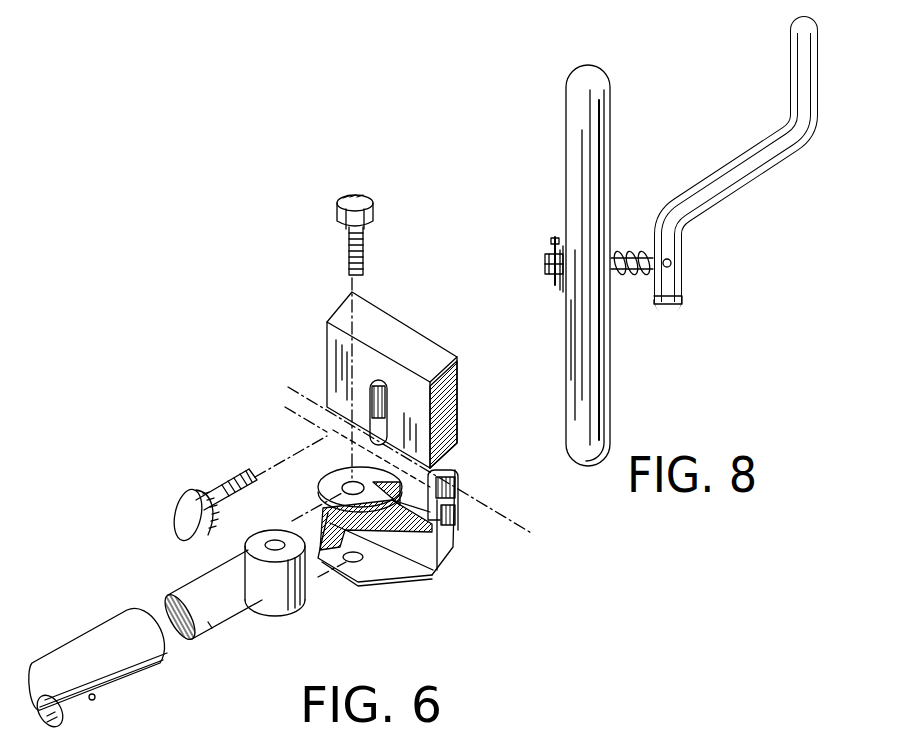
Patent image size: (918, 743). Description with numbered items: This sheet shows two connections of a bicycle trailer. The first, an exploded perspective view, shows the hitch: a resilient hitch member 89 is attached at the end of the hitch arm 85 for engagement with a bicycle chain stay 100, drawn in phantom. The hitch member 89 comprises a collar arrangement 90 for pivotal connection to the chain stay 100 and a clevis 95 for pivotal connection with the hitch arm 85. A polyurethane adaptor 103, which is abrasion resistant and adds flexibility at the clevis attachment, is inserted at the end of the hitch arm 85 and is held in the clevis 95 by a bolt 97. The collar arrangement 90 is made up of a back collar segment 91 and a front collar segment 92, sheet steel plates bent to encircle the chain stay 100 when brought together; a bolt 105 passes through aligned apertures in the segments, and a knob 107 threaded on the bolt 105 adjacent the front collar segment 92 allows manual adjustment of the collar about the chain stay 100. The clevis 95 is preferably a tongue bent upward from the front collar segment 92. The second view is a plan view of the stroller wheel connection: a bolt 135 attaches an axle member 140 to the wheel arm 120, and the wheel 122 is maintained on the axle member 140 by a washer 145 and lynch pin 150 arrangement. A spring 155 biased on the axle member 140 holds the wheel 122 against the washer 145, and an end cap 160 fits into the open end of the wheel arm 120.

In FIG. 6, the hitch arm 85 is at (112, 633).
In FIG. 6, the resilient hitch member 89 is at (298, 372).
In FIG. 6, the collar arrangement 90 is at (424, 558).
In FIG. 6, the back collar segment 91 is at (450, 472).
In FIG. 6, the front collar segment 92 is at (402, 332).
In FIG. 6, the clevis 95 is at (368, 548).
In FIG. 6, the bolt 97 is at (345, 238).
In FIG. 6, the chain stay 100 is at (508, 546).
In FIG. 6, the polyurethane adaptor 103 is at (218, 597).
In FIG. 6, the bolt 105 is at (222, 490).
In FIG. 6, the knob 107 is at (185, 510).
In FIG. 8, the wheel arm 120 is at (795, 97).
In FIG. 8, the wheel 122 is at (588, 73).
In FIG. 8, the bolt 135 is at (670, 263).
In FIG. 8, the axle member 140 is at (623, 250).
In FIG. 8, the washer 145 is at (560, 236).
In FIG. 8, the lynch pin 150 is at (548, 240).
In FIG. 8, the spring 155 is at (638, 278).
In FIG. 8, the end cap 160 is at (667, 305).